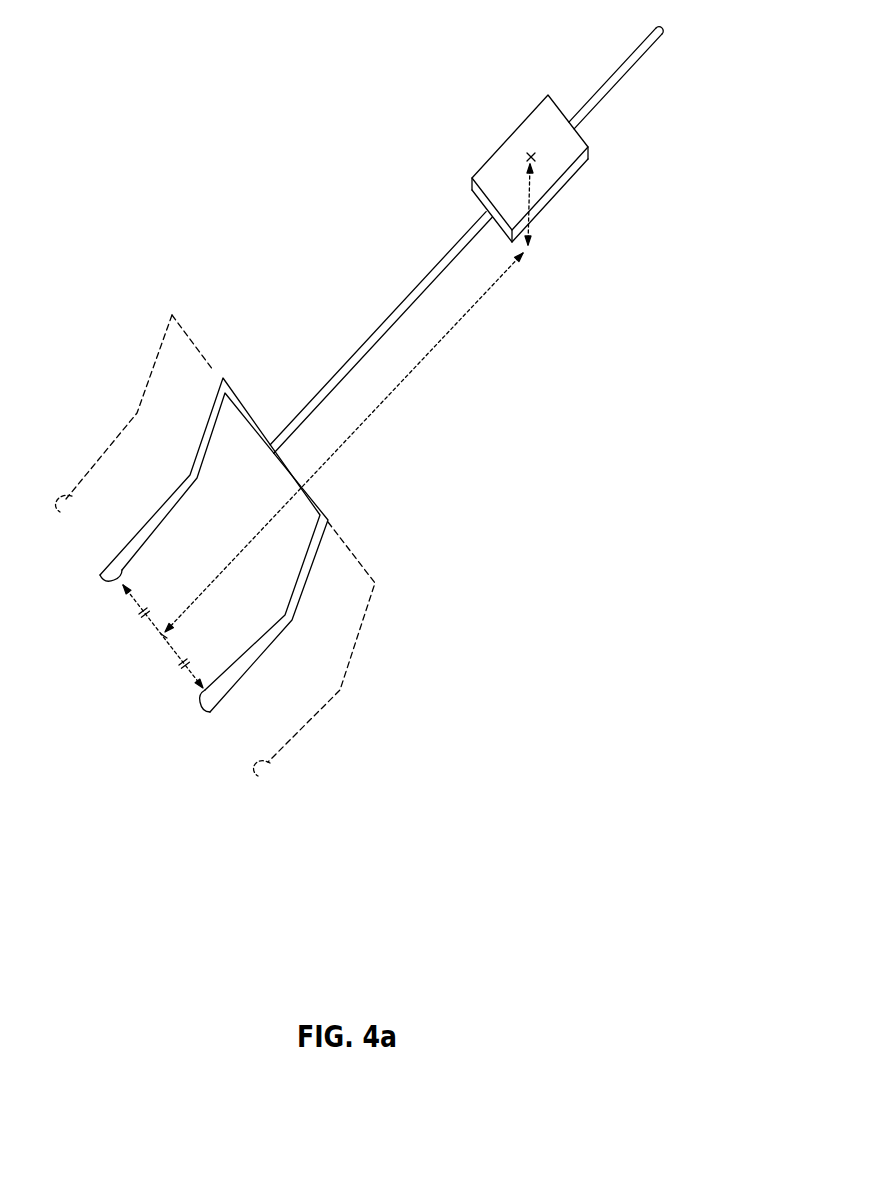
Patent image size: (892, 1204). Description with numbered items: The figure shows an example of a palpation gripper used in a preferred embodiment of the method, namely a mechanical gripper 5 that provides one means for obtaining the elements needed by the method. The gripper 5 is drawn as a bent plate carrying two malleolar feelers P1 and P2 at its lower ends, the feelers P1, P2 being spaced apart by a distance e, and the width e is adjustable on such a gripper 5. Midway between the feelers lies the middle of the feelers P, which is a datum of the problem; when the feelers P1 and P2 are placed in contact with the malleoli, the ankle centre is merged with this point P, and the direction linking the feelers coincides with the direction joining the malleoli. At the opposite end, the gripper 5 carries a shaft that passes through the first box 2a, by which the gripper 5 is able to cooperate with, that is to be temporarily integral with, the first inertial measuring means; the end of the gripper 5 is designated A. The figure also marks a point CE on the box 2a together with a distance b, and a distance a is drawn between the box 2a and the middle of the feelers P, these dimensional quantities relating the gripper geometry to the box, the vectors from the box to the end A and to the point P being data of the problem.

The mechanical gripper 5 is at (240, 104).
The first box 2a is at (512, 112).
The end of the gripper A is at (640, 98).
The electrode center CE is at (522, 156).
The distance b is at (530, 192).
The distance a is at (405, 380).
The distance e is at (166, 622).
The malleolar feeler P1 is at (118, 588).
The malleolar feeler P2 is at (200, 690).
The middle of the feelers P is at (160, 640).